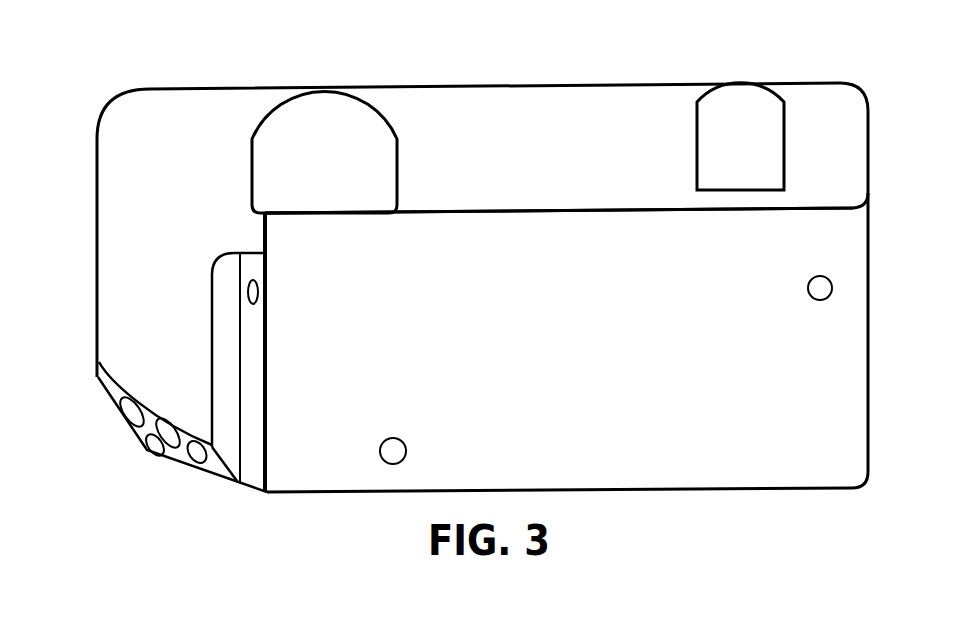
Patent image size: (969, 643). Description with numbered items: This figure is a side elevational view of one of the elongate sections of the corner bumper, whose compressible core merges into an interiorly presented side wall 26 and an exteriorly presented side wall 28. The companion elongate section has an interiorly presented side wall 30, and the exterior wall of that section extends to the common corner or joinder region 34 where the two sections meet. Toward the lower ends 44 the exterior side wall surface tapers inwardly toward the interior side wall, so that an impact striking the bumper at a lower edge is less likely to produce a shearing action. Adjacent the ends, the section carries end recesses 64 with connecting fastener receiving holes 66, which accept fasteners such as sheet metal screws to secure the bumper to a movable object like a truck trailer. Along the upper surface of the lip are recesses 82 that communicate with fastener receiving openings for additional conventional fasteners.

The interiorly presented side wall 26 is at (263, 233).
The exteriorly presented side wall 28 is at (96, 219).
The interiorly presented side wall 30 is at (573, 337).
The corner or joinder region 34 is at (267, 215).
The lower ends 44 is at (125, 427).
The end recesses 64 is at (253, 457).
The fastener receiving holes 66 is at (258, 292).
The recesses 82 is at (320, 117).